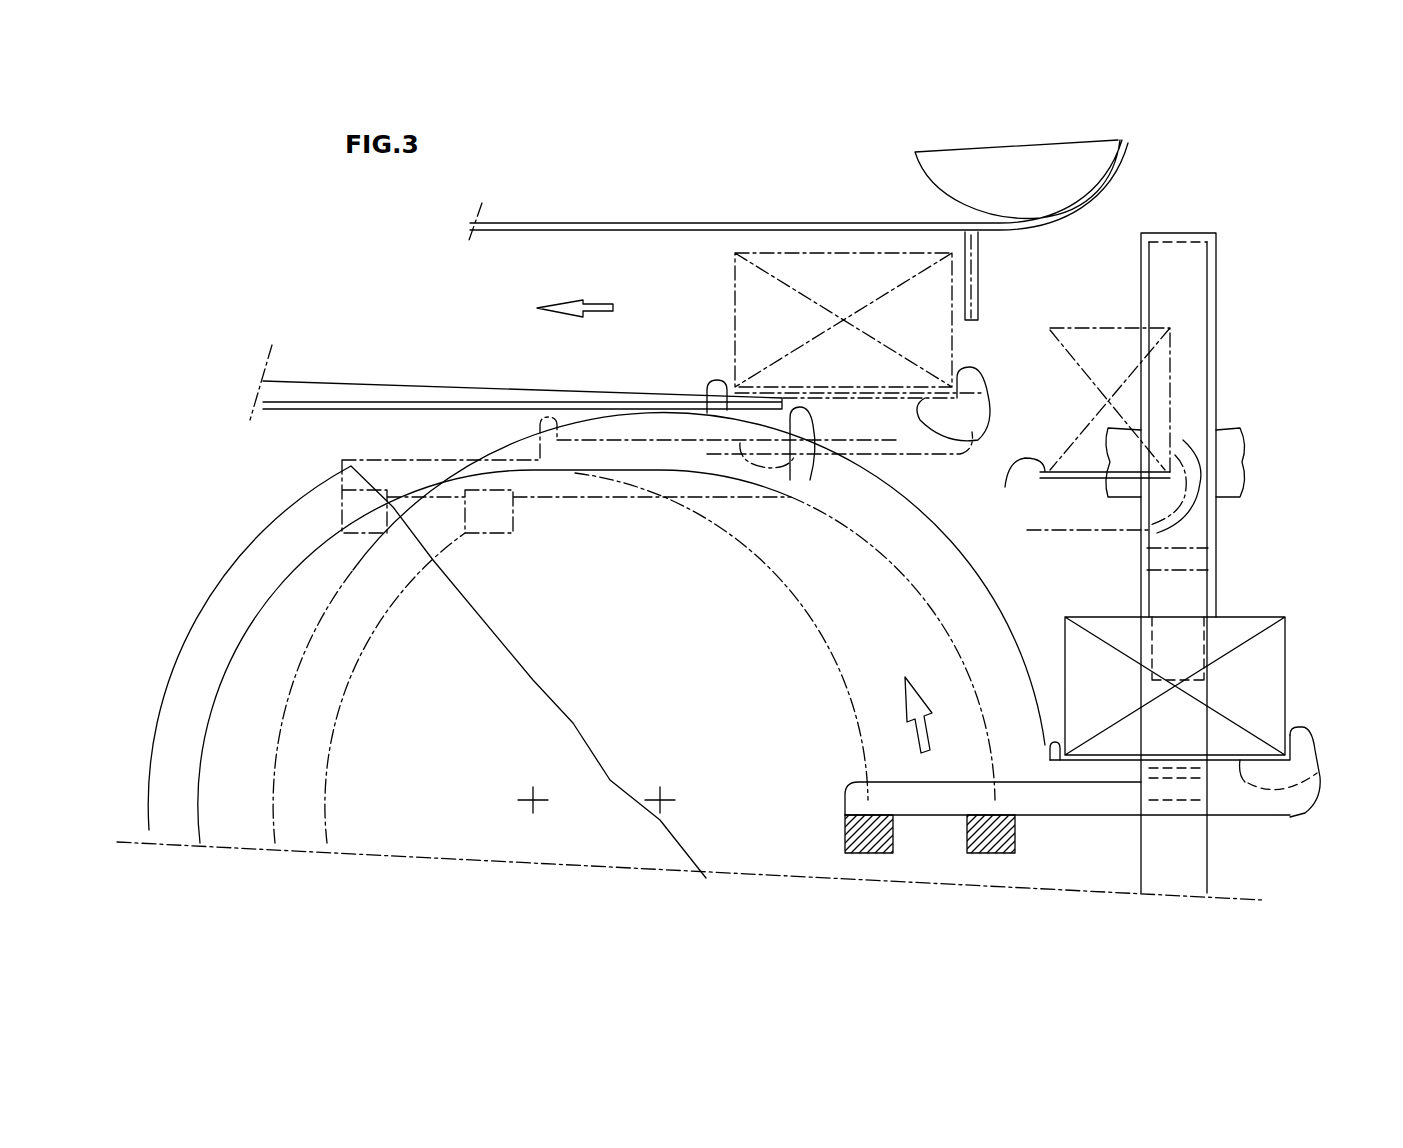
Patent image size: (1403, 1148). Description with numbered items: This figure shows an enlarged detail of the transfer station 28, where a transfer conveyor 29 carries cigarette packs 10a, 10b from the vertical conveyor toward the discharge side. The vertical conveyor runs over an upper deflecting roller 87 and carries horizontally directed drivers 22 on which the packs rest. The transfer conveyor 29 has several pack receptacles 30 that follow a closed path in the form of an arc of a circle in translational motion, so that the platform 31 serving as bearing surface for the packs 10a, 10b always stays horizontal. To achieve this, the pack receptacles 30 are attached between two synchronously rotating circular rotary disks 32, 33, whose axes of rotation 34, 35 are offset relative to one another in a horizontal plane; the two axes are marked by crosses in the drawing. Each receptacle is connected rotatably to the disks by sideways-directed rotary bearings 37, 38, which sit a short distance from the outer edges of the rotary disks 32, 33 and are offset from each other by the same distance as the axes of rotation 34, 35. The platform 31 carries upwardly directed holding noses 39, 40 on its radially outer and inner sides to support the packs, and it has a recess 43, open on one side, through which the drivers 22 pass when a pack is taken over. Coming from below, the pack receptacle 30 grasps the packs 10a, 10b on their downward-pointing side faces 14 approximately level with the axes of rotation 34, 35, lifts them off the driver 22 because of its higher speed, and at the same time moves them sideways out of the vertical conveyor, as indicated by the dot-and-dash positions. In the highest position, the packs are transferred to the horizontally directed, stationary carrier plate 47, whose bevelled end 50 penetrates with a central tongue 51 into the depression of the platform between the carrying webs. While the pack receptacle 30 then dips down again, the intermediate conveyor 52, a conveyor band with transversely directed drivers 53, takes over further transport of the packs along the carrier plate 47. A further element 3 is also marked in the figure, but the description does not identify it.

The housing 3 is at (1240, 760).
The pack 10a is at (1039, 432).
The pack 10b is at (860, 277).
The side face 14 is at (1247, 758).
The driver 22 is at (1187, 788).
The transfer station 28 is at (1212, 203).
The transfer conveyor 29 is at (272, 480).
The pack receptacle 30 is at (590, 440).
The platform 31 is at (670, 438).
The rotary disk 32 is at (163, 793).
The rotary disk 33 is at (1038, 815).
The axis of rotation 34 is at (530, 812).
The axis of rotation 35 is at (660, 812).
The rotary bearing 37 is at (877, 840).
The rotary bearing 38 is at (980, 843).
The holding nose 39 is at (1047, 742).
The holding nose 40 is at (1302, 750).
The recess 43 is at (1103, 784).
The carrier plate 47 is at (326, 372).
The bevelled end 50 is at (773, 392).
The central tongue 51 is at (727, 382).
The intermediate conveyor 52 is at (1094, 128).
The driver 53 is at (979, 272).
The upper deflecting roller 87 is at (1187, 277).